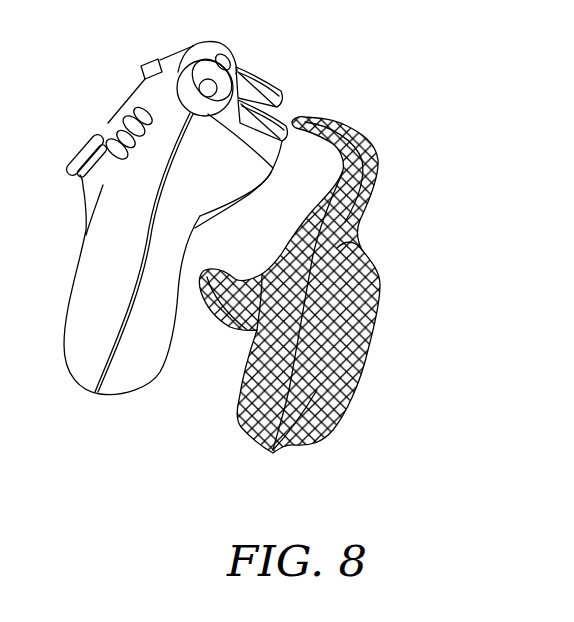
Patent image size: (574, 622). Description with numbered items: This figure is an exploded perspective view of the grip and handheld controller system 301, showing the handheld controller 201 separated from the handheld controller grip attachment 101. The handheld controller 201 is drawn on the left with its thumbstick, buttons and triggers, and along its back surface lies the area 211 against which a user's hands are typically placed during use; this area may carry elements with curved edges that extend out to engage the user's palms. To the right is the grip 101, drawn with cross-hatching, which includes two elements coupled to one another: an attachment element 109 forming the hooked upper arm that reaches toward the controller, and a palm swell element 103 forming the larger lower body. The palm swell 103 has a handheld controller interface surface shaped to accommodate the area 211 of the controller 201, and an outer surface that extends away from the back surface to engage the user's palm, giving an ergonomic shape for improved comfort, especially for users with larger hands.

The handheld controller 201 is at (262, 57).
The grip and handheld controller system 301 is at (319, 72).
The area on the back surface of the controller 211 is at (187, 313).
The handheld controller grip attachment 101 is at (326, 294).
The attachment element 109 is at (356, 113).
The palm swell element 103 is at (321, 474).